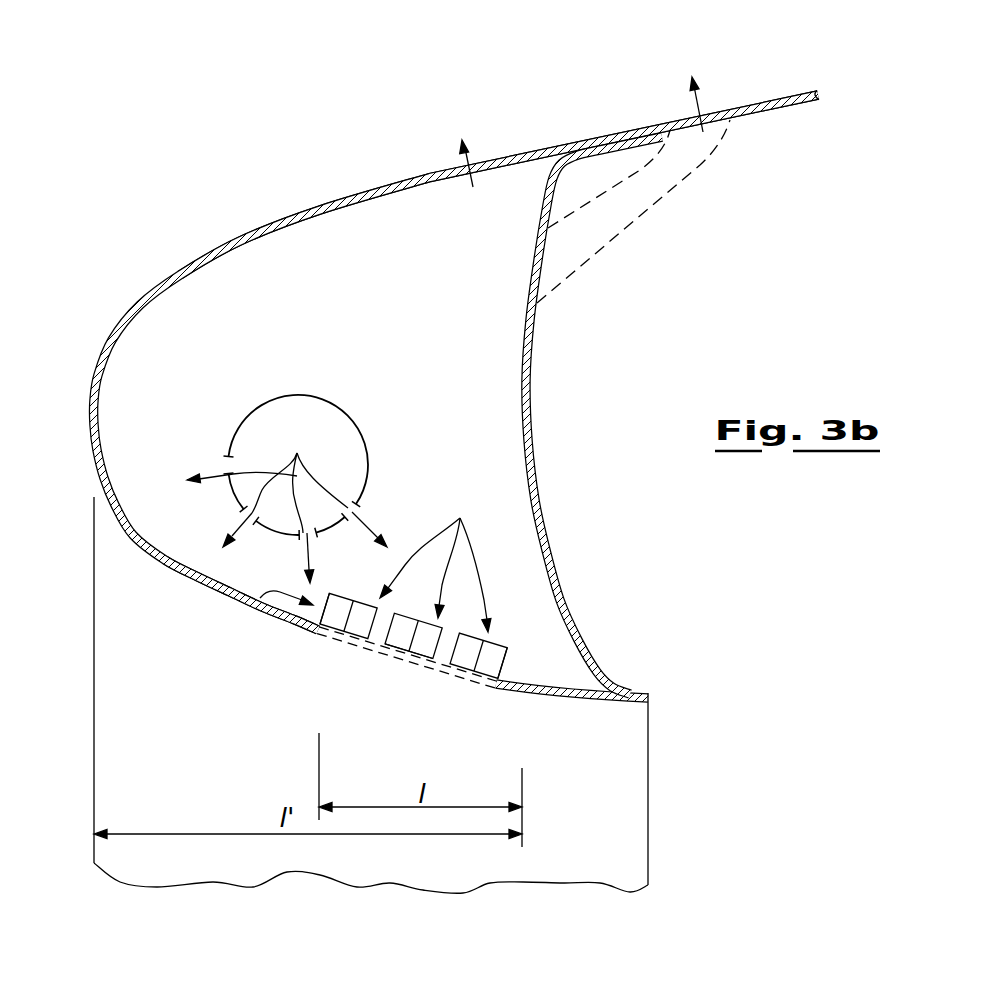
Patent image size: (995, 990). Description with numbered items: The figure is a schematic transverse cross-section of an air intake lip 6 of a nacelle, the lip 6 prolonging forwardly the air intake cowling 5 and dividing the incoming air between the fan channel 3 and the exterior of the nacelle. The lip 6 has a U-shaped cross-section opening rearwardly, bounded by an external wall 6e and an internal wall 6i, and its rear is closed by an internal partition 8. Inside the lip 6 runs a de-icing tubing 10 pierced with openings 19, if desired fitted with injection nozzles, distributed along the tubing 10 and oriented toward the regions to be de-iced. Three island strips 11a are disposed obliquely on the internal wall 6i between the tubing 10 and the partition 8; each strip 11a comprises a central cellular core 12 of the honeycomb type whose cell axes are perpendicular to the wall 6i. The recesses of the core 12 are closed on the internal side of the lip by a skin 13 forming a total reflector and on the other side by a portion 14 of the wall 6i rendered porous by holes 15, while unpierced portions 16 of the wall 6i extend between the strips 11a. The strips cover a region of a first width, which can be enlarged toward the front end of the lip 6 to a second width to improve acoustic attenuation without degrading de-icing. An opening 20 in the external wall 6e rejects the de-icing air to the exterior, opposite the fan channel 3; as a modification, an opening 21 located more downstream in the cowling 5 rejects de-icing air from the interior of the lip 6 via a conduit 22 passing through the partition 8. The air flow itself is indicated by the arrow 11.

The fan channel 3 is at (401, 861).
The air intake cowling 5 is at (803, 78).
The air intake lip 6 is at (101, 493).
The external wall of the lip 6e is at (337, 200).
The internal wall of the lip 6i is at (276, 615).
The internal partition 8 is at (530, 360).
The tubing 10 is at (224, 411).
The main air flow 11 is at (260, 599).
The island strip 11a is at (435, 561).
The central cellular core 12 is at (320, 629).
The skin forming a total reflector 13 is at (343, 595).
The porous portion of the wall 14 is at (327, 637).
The holes 15 is at (327, 643).
The unpierced wall portions 16 is at (383, 645).
The openings 19 is at (300, 477).
The opening in the external wall 20 is at (428, 177).
The downstream opening in the cowling 21 is at (714, 112).
The conduit 22 is at (677, 218).